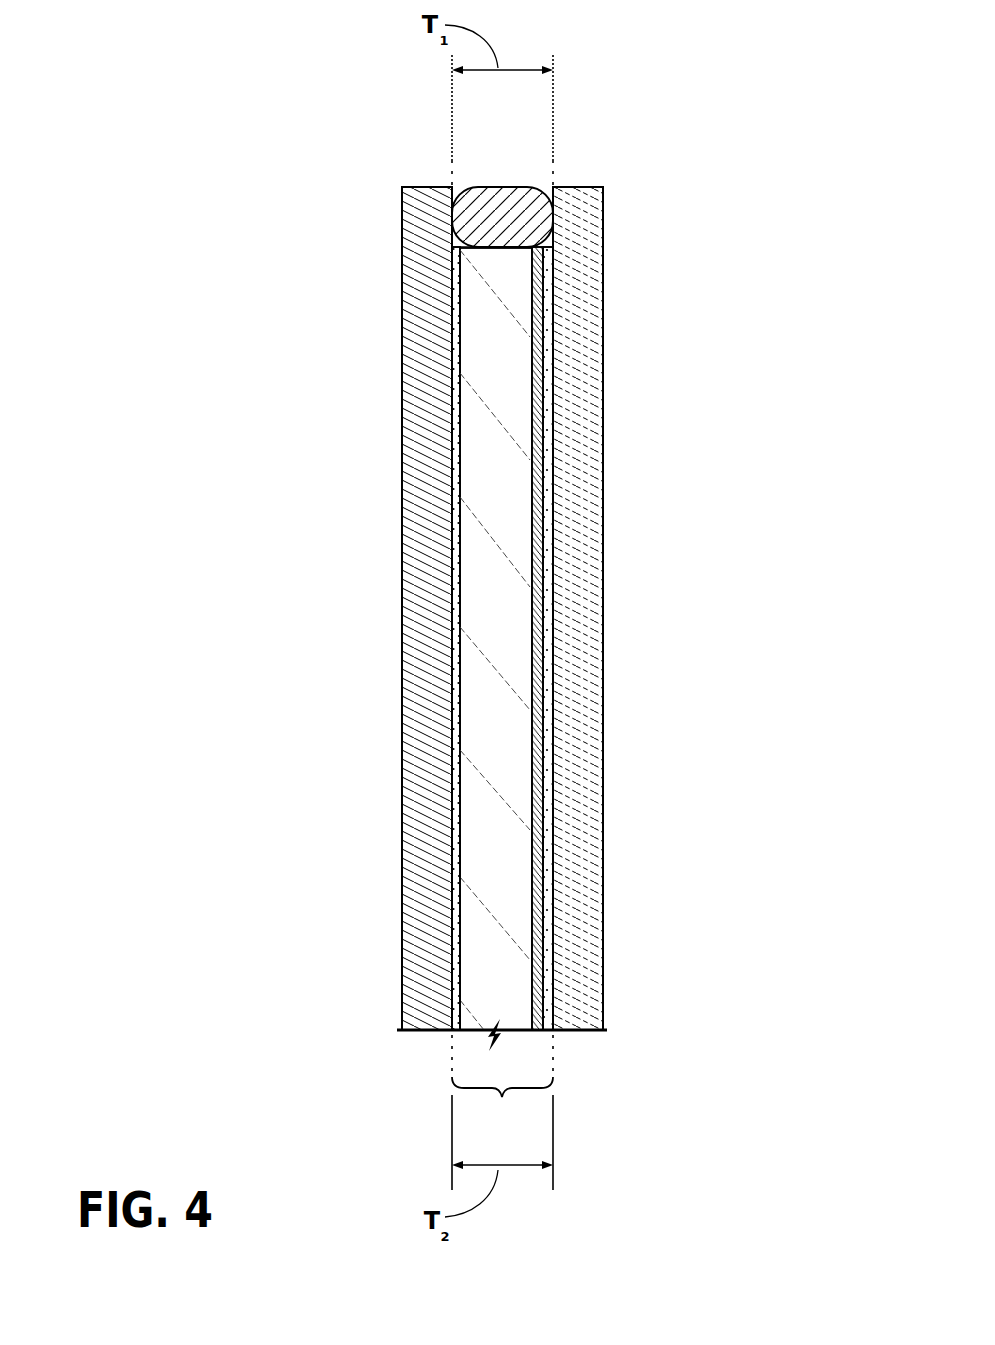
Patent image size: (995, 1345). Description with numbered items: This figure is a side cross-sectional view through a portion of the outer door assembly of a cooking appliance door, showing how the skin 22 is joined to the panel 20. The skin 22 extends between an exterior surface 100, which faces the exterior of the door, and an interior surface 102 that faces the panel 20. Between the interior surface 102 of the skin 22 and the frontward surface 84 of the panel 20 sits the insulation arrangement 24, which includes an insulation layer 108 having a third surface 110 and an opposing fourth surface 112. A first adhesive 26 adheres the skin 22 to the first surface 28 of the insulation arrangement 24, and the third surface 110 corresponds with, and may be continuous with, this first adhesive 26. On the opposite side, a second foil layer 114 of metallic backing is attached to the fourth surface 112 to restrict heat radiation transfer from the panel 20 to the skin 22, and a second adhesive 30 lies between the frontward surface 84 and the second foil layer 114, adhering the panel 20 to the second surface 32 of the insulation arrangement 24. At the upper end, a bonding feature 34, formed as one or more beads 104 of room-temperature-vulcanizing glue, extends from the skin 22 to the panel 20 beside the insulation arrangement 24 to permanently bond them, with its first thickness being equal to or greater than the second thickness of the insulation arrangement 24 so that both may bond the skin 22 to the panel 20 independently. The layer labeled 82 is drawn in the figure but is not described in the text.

The panel 20 is at (575, 186).
The skin 22 is at (428, 186).
The insulation arrangement 24 is at (502, 1084).
The first adhesive 26 is at (452, 1036).
The first surface 28 is at (458, 644).
The second adhesive 30 is at (554, 1036).
The second surface 32 is at (540, 750).
The bonding feature 34 is at (499, 180).
The first adhesive layer 82 is at (550, 916).
The frontward surface 84 is at (555, 848).
The exterior surface 100 is at (452, 957).
The interior surface 102 is at (450, 849).
The beads 104 is at (547, 238).
The insulation layer 108 is at (475, 1035).
The third surface 110 is at (462, 383).
The fourth surface 112 is at (530, 485).
The second foil layer 114 is at (537, 1034).